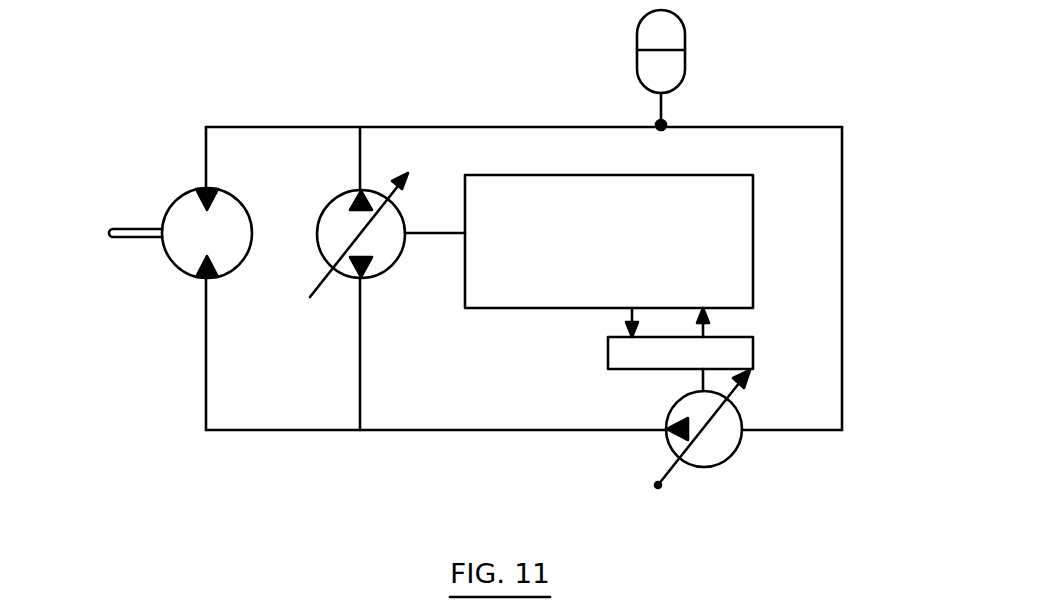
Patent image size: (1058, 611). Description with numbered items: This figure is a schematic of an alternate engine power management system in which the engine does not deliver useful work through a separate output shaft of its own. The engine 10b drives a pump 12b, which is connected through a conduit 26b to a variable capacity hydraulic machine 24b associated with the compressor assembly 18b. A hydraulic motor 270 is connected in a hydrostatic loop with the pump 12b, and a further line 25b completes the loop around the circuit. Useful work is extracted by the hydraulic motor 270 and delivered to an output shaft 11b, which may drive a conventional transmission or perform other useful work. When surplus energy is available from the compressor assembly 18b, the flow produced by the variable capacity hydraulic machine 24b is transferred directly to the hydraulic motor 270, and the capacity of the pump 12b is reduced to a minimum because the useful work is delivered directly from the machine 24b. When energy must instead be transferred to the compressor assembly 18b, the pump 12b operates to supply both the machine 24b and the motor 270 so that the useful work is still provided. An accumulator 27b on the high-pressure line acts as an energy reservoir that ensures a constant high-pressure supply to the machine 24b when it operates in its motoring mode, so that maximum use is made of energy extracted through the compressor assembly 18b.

The accumulator 27b is at (692, 70).
The hydraulic motor 270 is at (207, 233).
The output shaft 11b is at (128, 241).
The pump 12b is at (387, 235).
The engine 10b is at (609, 241).
The hydraulic line 25b is at (832, 229).
The compressor assembly 18b is at (608, 352).
The conduit 26b is at (502, 429).
The variable capacity hydraulic machine 24b is at (724, 448).